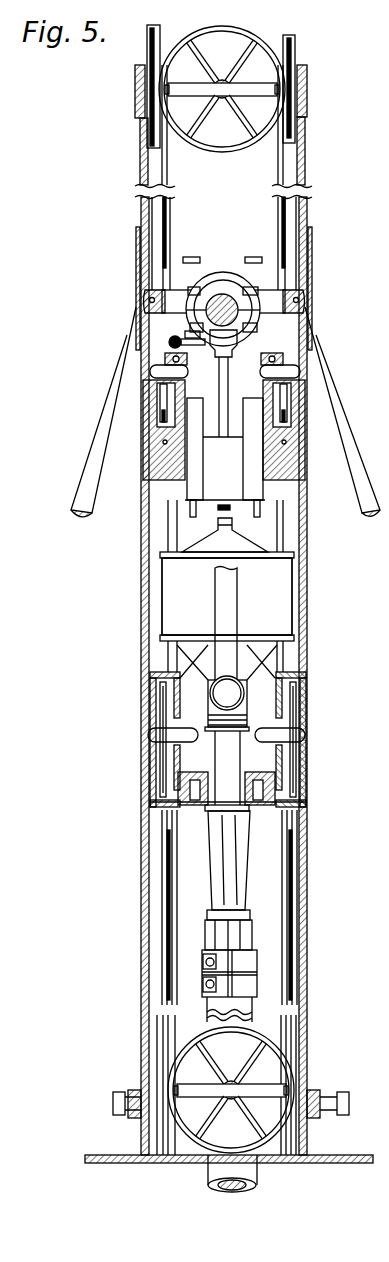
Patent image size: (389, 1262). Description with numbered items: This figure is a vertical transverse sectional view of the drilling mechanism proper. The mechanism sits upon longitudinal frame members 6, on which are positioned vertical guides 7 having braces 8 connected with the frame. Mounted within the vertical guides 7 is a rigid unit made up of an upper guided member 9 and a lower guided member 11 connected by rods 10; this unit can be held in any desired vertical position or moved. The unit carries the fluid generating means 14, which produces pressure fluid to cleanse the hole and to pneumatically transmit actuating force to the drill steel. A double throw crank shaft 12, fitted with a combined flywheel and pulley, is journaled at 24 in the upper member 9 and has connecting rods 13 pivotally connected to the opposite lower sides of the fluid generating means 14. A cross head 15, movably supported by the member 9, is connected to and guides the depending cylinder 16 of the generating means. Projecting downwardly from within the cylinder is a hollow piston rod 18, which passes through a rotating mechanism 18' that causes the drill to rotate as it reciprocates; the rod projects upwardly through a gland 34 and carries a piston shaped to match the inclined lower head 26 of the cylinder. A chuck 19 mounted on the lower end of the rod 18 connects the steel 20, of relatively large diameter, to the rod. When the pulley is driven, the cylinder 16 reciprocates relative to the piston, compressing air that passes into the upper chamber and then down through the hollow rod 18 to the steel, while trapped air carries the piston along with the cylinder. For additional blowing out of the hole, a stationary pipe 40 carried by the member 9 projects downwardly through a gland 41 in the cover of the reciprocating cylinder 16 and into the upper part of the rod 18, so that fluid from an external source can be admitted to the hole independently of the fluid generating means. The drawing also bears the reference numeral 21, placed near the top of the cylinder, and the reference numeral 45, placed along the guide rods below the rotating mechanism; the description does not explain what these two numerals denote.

The longitudinal frame members 6 is at (135, 1092).
The vertical guides 7 is at (142, 159).
The braces 8 is at (110, 384).
The upper guided member 9 is at (301, 456).
The rods 10 is at (148, 535).
The lower guided member 11 is at (232, 760).
The double throw crank shaft 12 is at (215, 257).
The connecting rods 13 is at (231, 598).
The fluid generating means 14 is at (160, 619).
The cross head 15 is at (240, 470).
The cylinder 16 is at (170, 593).
The piston rod 18 is at (248, 744).
The rotating mechanism 18' is at (252, 802).
The chuck 19 is at (260, 962).
The steel 20 is at (254, 1002).
The conical valve head 21 is at (170, 556).
The journal 24 is at (229, 292).
The lower head 26 is at (290, 641).
The gland 34 is at (246, 720).
The stationary pipe 40 is at (195, 511).
The gland 41 is at (256, 512).
The guide rods 45 is at (160, 854).